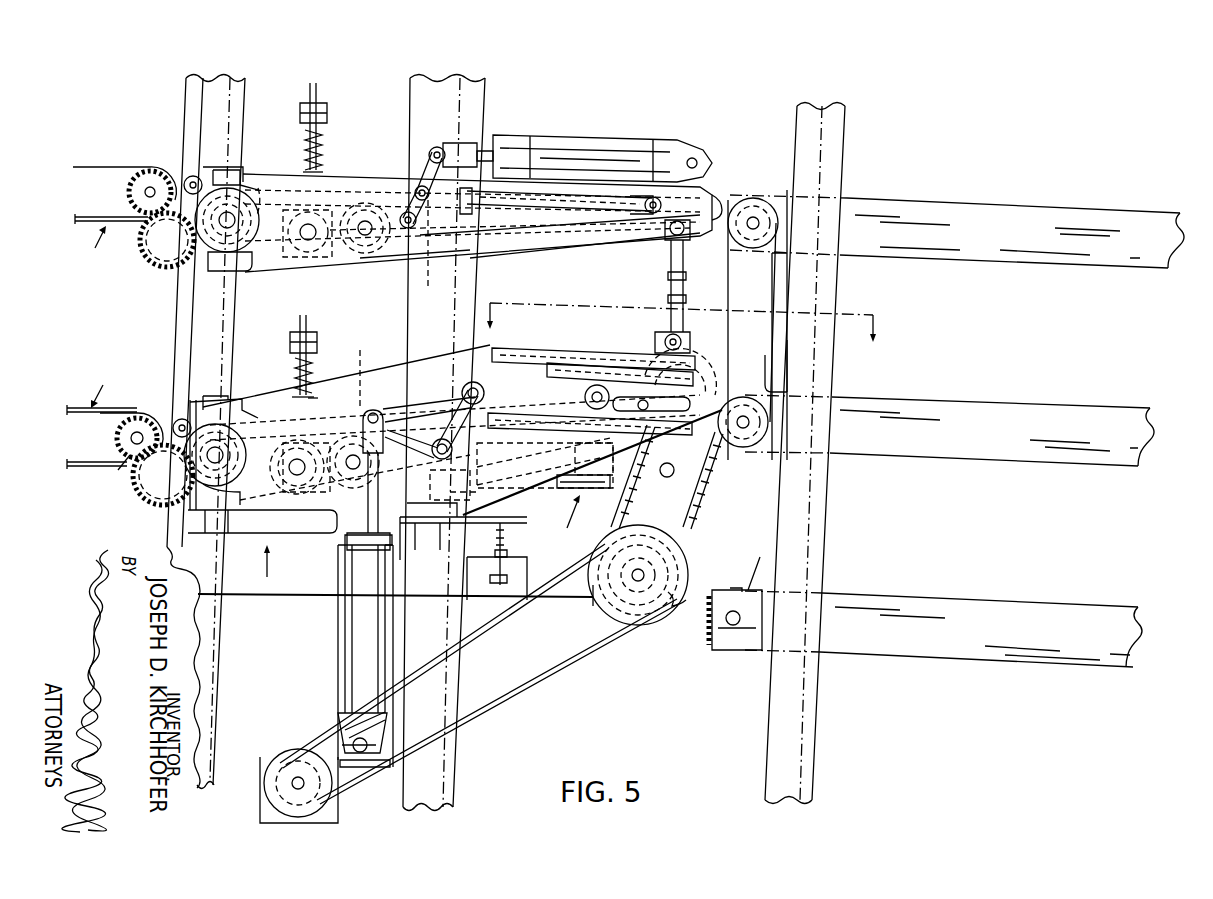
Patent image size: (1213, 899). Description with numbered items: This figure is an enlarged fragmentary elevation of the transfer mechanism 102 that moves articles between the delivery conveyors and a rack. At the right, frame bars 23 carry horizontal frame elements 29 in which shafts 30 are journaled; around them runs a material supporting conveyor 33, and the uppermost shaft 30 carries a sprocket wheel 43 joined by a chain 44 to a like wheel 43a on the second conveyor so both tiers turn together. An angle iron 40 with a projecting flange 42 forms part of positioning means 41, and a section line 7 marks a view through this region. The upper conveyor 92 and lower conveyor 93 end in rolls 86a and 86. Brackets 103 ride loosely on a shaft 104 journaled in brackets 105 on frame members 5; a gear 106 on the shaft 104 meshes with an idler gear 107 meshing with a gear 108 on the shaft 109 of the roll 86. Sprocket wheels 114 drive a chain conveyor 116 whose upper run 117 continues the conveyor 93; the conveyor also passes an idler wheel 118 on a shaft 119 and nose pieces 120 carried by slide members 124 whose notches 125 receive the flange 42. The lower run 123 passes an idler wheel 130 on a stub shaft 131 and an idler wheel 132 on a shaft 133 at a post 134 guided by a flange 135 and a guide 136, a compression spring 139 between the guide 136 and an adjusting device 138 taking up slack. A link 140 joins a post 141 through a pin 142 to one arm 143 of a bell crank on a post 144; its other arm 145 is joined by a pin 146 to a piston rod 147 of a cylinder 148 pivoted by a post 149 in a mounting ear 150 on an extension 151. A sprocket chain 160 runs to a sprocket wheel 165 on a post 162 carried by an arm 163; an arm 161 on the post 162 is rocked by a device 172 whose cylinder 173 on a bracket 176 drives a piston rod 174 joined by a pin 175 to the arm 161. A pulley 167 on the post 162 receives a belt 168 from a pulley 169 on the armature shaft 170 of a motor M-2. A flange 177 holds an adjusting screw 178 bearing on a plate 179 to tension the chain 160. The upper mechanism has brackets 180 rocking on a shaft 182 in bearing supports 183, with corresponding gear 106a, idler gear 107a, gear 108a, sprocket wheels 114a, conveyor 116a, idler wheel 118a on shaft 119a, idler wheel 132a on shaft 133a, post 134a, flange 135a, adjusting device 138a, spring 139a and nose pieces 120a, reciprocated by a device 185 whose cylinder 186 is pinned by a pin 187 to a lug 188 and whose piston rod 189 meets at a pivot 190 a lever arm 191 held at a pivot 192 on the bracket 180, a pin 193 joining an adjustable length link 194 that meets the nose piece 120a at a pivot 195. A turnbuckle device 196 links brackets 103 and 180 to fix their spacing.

The frame member 5 is at (236, 340).
The section line 7 is at (683, 332).
The frame bar 23 is at (818, 519).
The horizontal frame element 29 is at (1053, 258).
The shaft 30 is at (762, 435).
The material supporting conveyor 33 is at (957, 422).
The angle iron 40 is at (735, 591).
The positioning means 41 is at (710, 348).
The flange 42 is at (738, 593).
The pulley or sprocket wheel 43 is at (757, 325).
The pulley or sprocket wheel 43a is at (770, 425).
The belt or chain 44 is at (733, 302).
The roll 86 is at (112, 440).
The roll 86a is at (108, 217).
The upper conveyor 92 is at (93, 246).
The lower conveyor 93 is at (102, 387).
The transfer mechanism 102 is at (395, 443).
The supporting bracket 103 is at (262, 488).
The shaft 104 is at (247, 510).
The bracket 105 is at (238, 400).
The gear 106 is at (231, 439).
The gear 106a is at (249, 215).
The idler gear 107 is at (160, 506).
The idler gear 107a is at (157, 268).
The gear 108 is at (138, 418).
The gear 108a is at (150, 172).
The shaft 109 is at (120, 470).
The sprocket wheel 114 is at (217, 510).
The sprocket wheel 114a is at (257, 185).
The chain conveyor 116 is at (360, 405).
The chain conveyor 116a is at (509, 229).
The upper run 117 is at (449, 431).
The idler wheel 118 is at (175, 420).
The idler wheel 118a is at (190, 177).
The shaft 119 is at (210, 400).
The shaft 119a is at (210, 166).
The nose piece 120 is at (664, 392).
The nose piece 120a is at (715, 203).
The lower run 123 is at (518, 465).
The slide member 124 is at (620, 367).
The notch 125 is at (762, 375).
The idler wheel 130 is at (346, 474).
The stub shaft 131 is at (300, 480).
The idler wheel 132 is at (273, 510).
The idler wheel 132a is at (292, 270).
The shaft 133 is at (288, 474).
The shaft 133a is at (352, 258).
The post 134 is at (290, 386).
The post 134a is at (320, 167).
The flange 135 is at (340, 452).
The flange 135a is at (350, 182).
The guide 136 is at (314, 398).
The adjusting device 138 is at (303, 359).
The adjusting device 138a is at (339, 127).
The compression spring 139 is at (312, 372).
The compression spring 139a is at (322, 147).
The link 140 is at (518, 356).
The post 141 is at (602, 386).
The pin 142 is at (480, 387).
The bell crank arm 143 is at (482, 428).
The post 144 is at (440, 460).
The bell crank arm 145 is at (414, 440).
The pin 146 is at (373, 410).
The piston rod 147 is at (340, 541).
The cylinder 148 is at (354, 656).
The post 149 is at (381, 746).
The mounting ear 150 is at (340, 742).
The extension 151 is at (396, 648).
The sprocket chain 160 is at (670, 477).
The arm 161 is at (688, 523).
The post 162 is at (629, 575).
The arm 163 is at (480, 674).
The sprocket wheel 165 is at (674, 600).
The pulley 167 is at (590, 601).
The driving belt 168 is at (605, 648).
The pulley 169 is at (278, 766).
The armature shaft 170 is at (277, 777).
The pneumatic or hydraulic device 172 is at (568, 522).
The cylinder 173 is at (560, 490).
The piston rod 174 is at (590, 488).
The pin 175 is at (665, 478).
The mounting bracket 176 is at (470, 495).
The flange 177 is at (517, 553).
The adjusting screw 178 is at (485, 578).
The plate 179 is at (517, 520).
The bracket plate 180 is at (375, 270).
The shaft 182 is at (240, 214).
The bearing support 183 is at (242, 271).
The air or hydraulic device 185 is at (597, 157).
The cylinder 186 is at (645, 140).
The pin 187 is at (693, 157).
The lug 188 is at (714, 196).
The piston rod 189 is at (488, 150).
The pivot 190 is at (437, 147).
The lever arm 191 is at (418, 172).
The pivot 192 is at (418, 222).
The pin 193 is at (418, 187).
The adjustable length link 194 is at (500, 206).
The pivot 195 is at (645, 208).
The turnbuckle device 196 is at (666, 289).
The electric motor M-2 is at (263, 783).